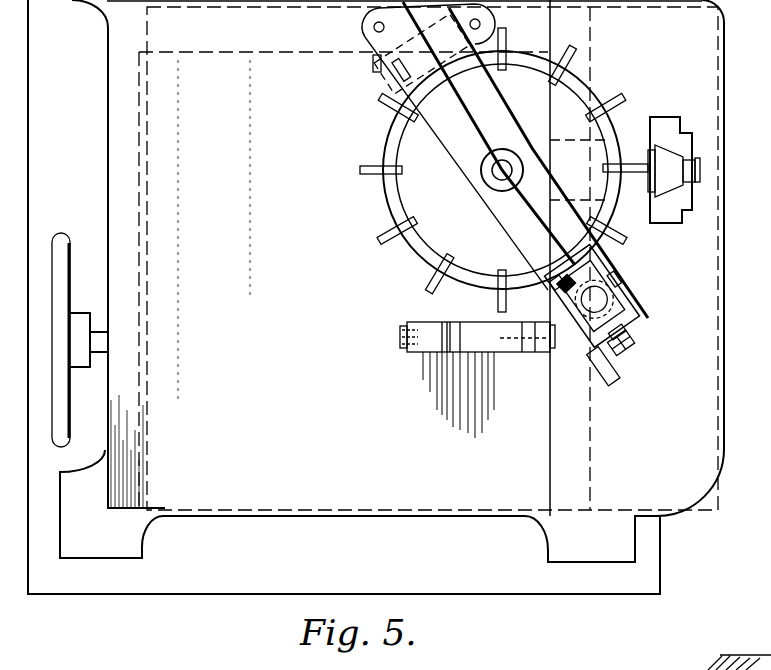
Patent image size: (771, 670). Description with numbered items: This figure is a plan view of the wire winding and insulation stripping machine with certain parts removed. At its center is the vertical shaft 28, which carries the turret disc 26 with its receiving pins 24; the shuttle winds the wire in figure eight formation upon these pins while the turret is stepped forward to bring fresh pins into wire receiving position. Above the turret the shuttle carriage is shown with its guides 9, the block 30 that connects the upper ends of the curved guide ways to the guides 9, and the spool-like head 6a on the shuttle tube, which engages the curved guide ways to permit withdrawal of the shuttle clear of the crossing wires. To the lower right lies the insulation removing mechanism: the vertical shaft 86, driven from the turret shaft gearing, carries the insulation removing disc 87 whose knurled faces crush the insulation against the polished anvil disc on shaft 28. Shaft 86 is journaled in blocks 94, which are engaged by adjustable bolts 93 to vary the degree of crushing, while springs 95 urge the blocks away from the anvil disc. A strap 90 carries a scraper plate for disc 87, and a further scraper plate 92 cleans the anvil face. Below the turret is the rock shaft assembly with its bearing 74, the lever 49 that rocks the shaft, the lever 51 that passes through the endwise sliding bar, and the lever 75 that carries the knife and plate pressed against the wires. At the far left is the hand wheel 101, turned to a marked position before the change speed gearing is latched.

The hand wheel 101 is at (63, 236).
The scraper plate 92 is at (415, 90).
The bolts 93 is at (393, 208).
The vertical shaft 28 is at (500, 173).
The turret disc 26 is at (502, 170).
The receiving pins 24 is at (434, 274).
The lever 49 is at (415, 326).
The lever 51 is at (450, 324).
The bearing 74 is at (506, 352).
The lever 75 is at (532, 352).
The guides 9 is at (660, 148).
The block 30 is at (672, 158).
The spool-like head 6a is at (700, 168).
The springs 95 is at (585, 268).
The blocks 94 is at (590, 280).
The insulation removing disc 87 is at (612, 292).
The vertical shaft 86 is at (603, 299).
The strap 90 is at (615, 373).